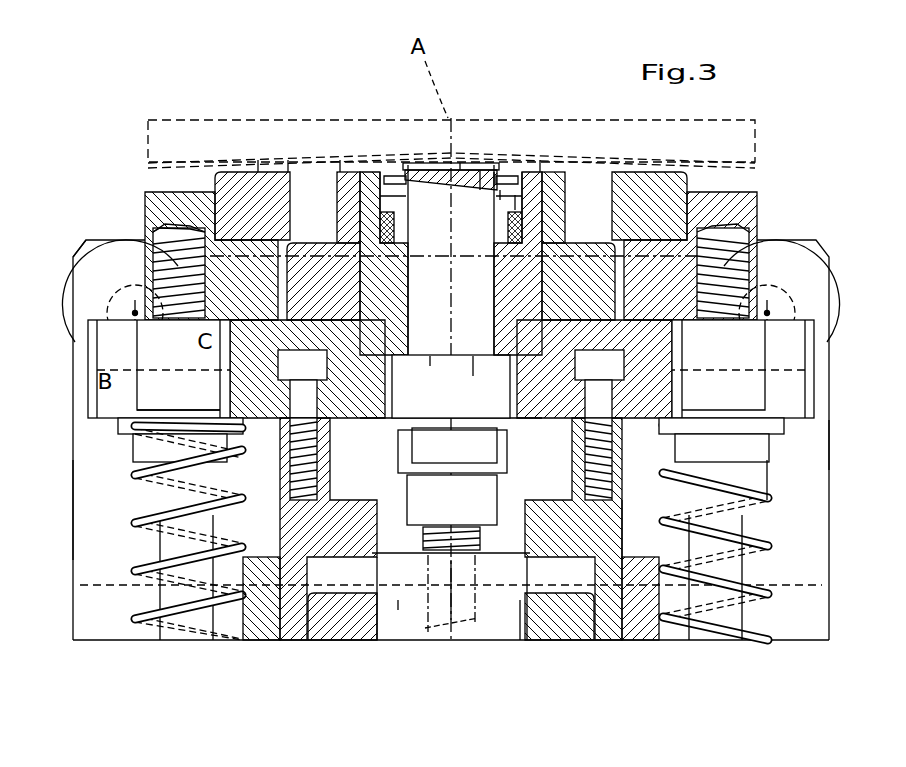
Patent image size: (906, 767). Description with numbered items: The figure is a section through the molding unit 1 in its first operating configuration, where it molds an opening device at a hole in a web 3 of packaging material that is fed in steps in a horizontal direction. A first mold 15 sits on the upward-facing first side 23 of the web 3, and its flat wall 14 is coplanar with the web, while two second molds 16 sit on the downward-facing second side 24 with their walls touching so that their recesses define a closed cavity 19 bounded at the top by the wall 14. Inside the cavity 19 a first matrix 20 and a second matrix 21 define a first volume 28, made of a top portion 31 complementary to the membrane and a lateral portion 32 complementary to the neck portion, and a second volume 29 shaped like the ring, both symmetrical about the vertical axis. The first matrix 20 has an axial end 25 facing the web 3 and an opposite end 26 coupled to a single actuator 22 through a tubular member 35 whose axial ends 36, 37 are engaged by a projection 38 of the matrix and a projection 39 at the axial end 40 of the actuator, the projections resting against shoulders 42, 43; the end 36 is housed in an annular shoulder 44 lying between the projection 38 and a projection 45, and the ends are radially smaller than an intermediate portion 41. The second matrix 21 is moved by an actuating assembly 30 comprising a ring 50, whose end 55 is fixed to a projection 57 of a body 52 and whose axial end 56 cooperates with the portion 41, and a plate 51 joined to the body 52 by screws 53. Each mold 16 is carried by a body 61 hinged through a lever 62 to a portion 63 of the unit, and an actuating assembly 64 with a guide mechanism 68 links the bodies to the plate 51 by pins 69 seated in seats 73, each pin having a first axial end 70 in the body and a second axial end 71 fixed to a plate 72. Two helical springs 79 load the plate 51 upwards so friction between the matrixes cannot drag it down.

The molding unit 1 is at (143, 118).
The web 3 is at (742, 170).
The flat wall 14 is at (546, 168).
The first mold 15 is at (350, 132).
The second molds 16 is at (230, 215).
The closed cavity 19 is at (398, 175).
The first matrix 20 is at (470, 168).
The second matrix 21 is at (498, 182).
The actuator 22 is at (522, 622).
The first side 23 is at (290, 160).
The second side 24 is at (262, 150).
The axial end 25 is at (451, 260).
The end 26 is at (473, 456).
The first volume 28 is at (522, 202).
The second volume 29 is at (506, 196).
The actuating assembly 30 is at (838, 332).
The top portion 31 is at (482, 195).
The lateral portion 32 is at (515, 206).
The tubular member 35 is at (385, 600).
The axial end 36 is at (437, 470).
The axial end 37 is at (532, 602).
The projection 38 is at (437, 362).
The projection 39 is at (430, 632).
The axial end 40 is at (470, 600).
The intermediate portion 41 is at (550, 470).
The shoulder 42 is at (410, 446).
The shoulder 43 is at (400, 600).
The shoulder 44 is at (473, 376).
The projection 45 is at (455, 350).
The ring 50 is at (345, 574).
The plate 51 is at (785, 394).
The body 52 is at (606, 541).
The screws 53 is at (300, 450).
The end 55 is at (540, 592).
The axial end 56 is at (398, 537).
The projection 57 is at (582, 622).
The body 61 is at (168, 215).
The lever 62 is at (112, 272).
The portion 63 is at (73, 276).
The actuating assembly 64 is at (775, 472).
The second guide mechanism 68 is at (118, 502).
The pins 69 is at (152, 396).
The first axial end 70 is at (178, 238).
The second axial end 71 is at (235, 470).
The plate 72 is at (243, 426).
The seats 73 is at (158, 240).
The helical springs 79 is at (165, 616).